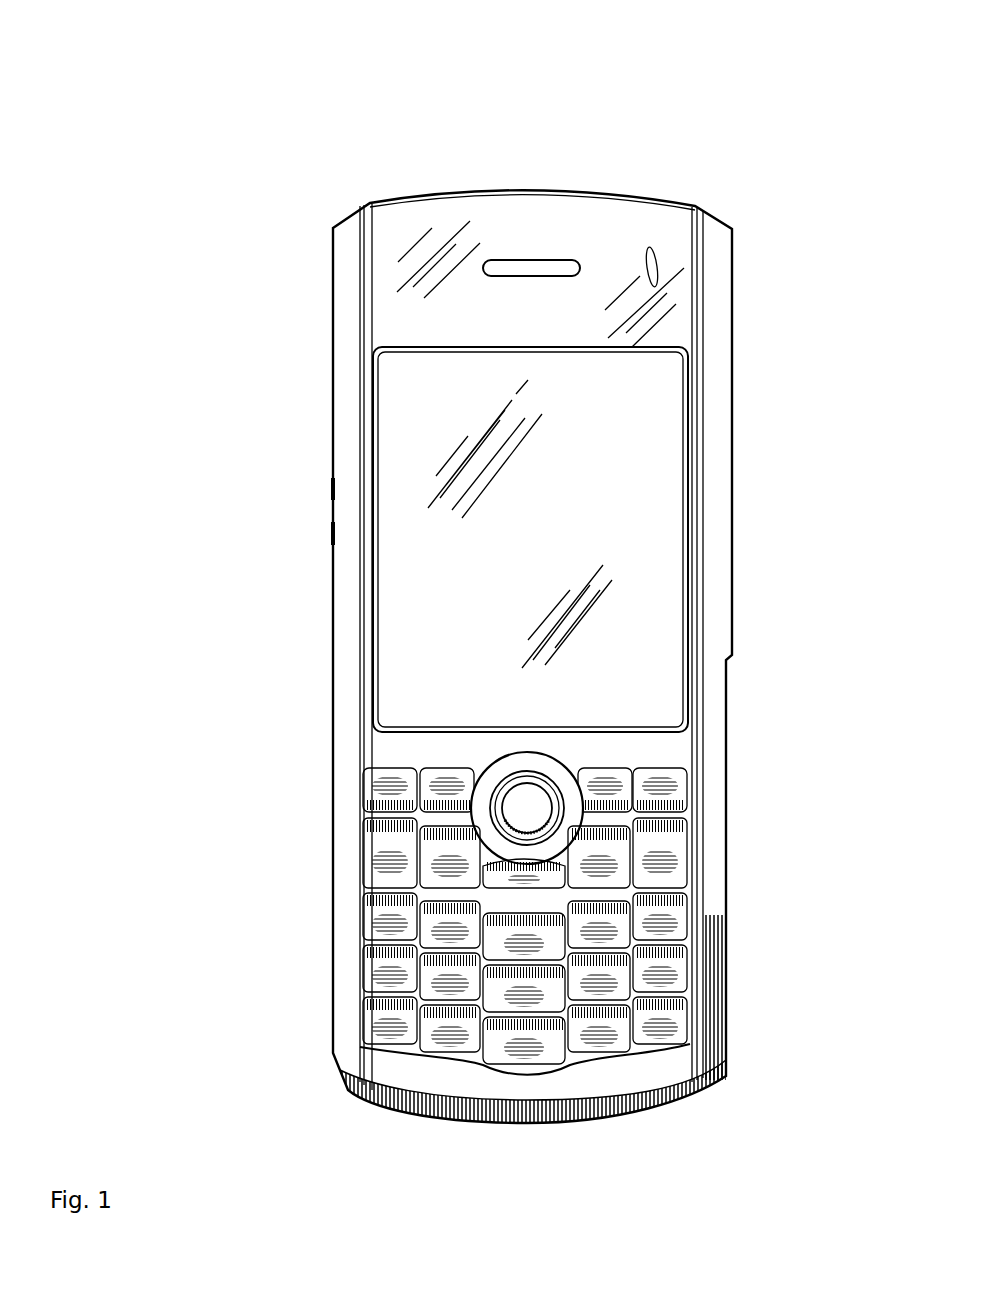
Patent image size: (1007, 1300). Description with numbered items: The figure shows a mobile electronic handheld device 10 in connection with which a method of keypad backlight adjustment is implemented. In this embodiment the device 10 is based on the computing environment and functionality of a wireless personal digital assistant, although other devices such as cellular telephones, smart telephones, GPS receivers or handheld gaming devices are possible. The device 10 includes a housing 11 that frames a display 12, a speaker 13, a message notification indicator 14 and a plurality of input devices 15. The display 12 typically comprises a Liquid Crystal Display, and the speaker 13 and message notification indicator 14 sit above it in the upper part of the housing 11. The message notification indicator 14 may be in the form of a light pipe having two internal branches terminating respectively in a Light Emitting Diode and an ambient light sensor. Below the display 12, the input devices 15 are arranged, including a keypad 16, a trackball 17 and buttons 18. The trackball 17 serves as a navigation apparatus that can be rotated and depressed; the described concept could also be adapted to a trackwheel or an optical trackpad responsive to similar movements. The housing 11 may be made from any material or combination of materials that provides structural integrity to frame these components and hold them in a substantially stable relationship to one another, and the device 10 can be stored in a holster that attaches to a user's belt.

The mobile electronic handheld device 10 is at (555, 148).
The housing 11 is at (327, 452).
The display 12 is at (653, 517).
The speaker 13 is at (537, 252).
The message notification indicator 14 is at (648, 246).
The input devices 15 is at (562, 757).
The keypad 16 is at (682, 960).
The trackball 17 is at (525, 807).
The buttons 18 is at (443, 797).